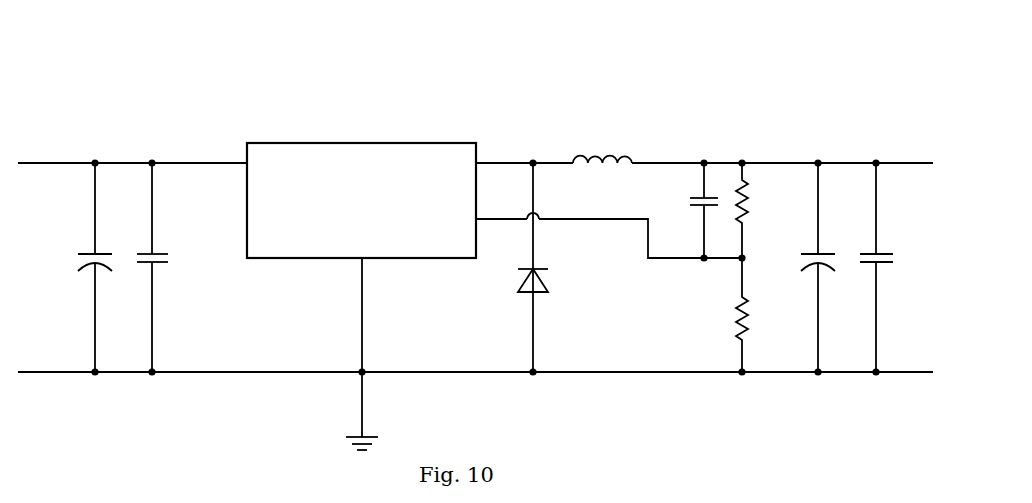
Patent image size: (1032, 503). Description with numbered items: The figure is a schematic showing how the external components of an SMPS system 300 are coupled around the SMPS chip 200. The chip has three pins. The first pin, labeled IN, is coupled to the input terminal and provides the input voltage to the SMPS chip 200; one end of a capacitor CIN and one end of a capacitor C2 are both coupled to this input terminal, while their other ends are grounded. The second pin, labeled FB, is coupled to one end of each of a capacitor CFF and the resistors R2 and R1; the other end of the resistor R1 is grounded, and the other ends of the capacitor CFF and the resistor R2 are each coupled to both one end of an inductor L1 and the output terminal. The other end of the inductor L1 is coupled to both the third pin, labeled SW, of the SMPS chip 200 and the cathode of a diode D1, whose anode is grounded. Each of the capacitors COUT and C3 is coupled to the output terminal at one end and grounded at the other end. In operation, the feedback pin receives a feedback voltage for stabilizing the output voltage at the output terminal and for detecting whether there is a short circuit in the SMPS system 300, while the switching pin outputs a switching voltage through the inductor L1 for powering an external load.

The SMPS chip 200 is at (393, 143).
The SMPS system 300 is at (85, 39).
The capacitor CIN is at (87, 267).
The capacitor C2 is at (159, 267).
The diode D1 is at (553, 280).
The inductor L1 is at (602, 151).
The capacitor CFF is at (689, 210).
The resistor R2 is at (757, 210).
The resistor R1 is at (757, 315).
The capacitor COUT is at (805, 267).
The capacitor C3 is at (885, 267).